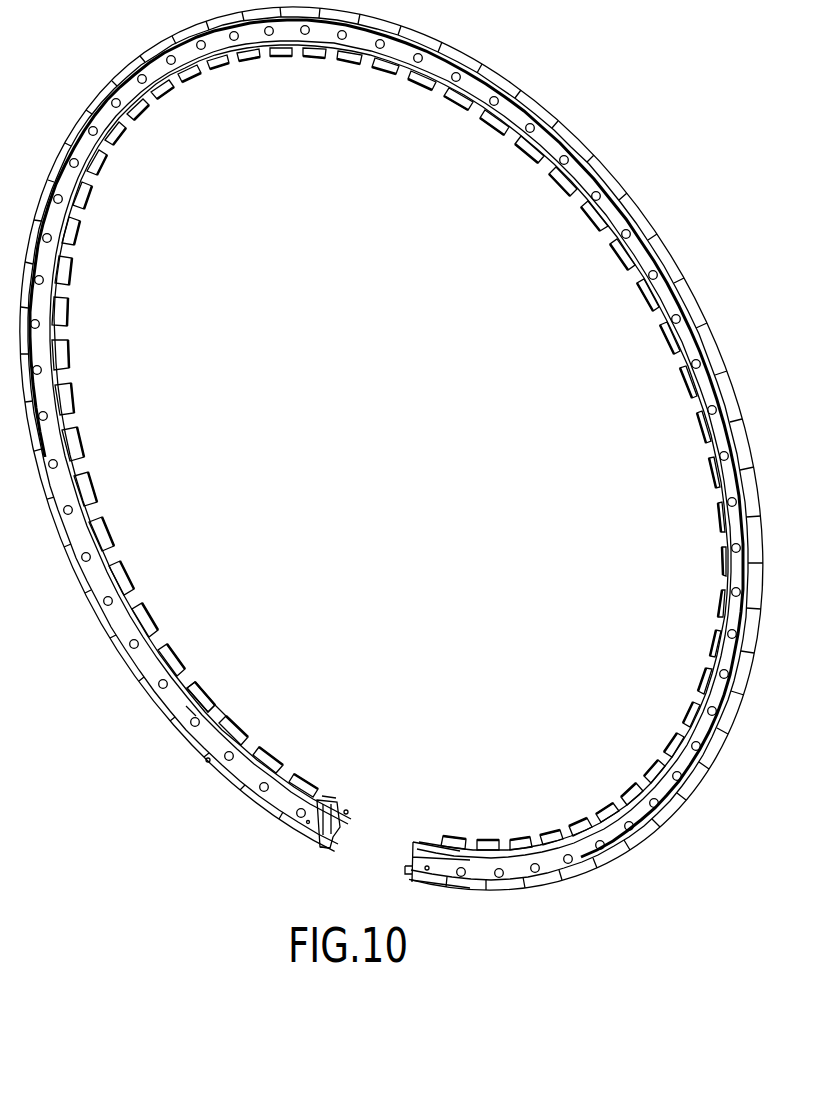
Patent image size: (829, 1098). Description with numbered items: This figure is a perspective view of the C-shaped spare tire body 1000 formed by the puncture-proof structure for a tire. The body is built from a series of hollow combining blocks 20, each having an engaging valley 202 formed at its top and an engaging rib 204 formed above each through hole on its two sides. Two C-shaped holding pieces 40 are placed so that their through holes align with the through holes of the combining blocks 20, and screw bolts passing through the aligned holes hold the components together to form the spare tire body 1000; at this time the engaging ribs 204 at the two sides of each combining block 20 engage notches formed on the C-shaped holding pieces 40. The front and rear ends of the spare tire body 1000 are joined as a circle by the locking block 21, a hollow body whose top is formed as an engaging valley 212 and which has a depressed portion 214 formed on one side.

The spare tire body 1000 is at (353, 497).
The combining block 20 is at (222, 696).
The engaging valley 202 is at (220, 708).
The engaging rib 204 is at (190, 712).
The locking block 21 is at (340, 822).
The engaging valley 212 is at (328, 794).
The depressed portion 214 is at (322, 843).
The C-shaped holding piece 40 is at (208, 760).